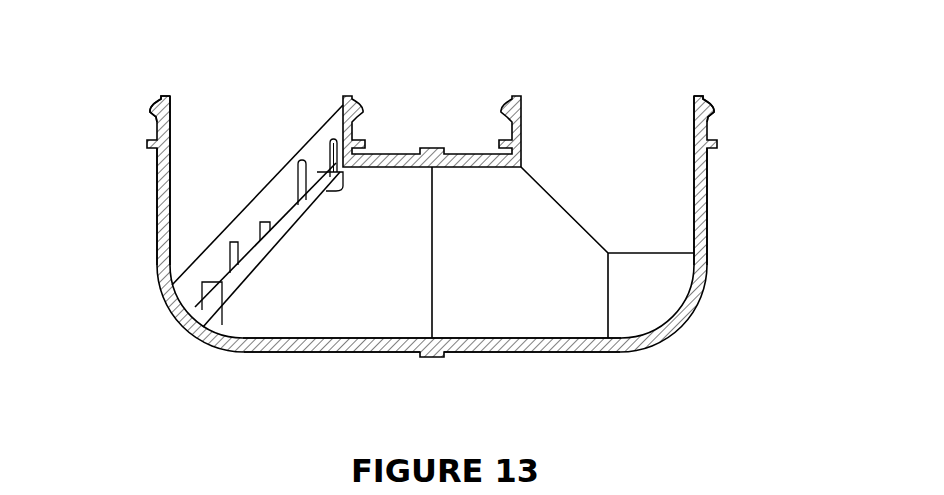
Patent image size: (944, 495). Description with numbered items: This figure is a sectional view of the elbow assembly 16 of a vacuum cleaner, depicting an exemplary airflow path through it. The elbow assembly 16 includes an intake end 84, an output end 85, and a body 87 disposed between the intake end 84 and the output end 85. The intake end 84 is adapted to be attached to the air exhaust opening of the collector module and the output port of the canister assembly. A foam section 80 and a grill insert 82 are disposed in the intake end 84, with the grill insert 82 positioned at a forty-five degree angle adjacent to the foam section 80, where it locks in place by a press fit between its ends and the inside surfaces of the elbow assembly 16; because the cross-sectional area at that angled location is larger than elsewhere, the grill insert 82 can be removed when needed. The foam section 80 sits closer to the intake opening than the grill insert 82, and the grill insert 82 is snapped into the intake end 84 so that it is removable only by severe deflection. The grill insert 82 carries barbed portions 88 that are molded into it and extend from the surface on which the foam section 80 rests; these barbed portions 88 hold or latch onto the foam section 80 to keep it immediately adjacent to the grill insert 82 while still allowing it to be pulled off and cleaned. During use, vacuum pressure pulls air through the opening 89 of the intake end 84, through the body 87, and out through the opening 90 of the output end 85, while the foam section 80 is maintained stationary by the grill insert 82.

The elbow assembly 16 is at (765, 100).
The foam section 80 is at (302, 200).
The grill insert 82 is at (312, 205).
The intake end 84 is at (156, 225).
The output end 85 is at (708, 205).
The body 87 is at (543, 350).
The barbed portion 88 is at (230, 243).
The opening of the intake end 89 is at (190, 95).
The opening of the output end 90 is at (672, 95).